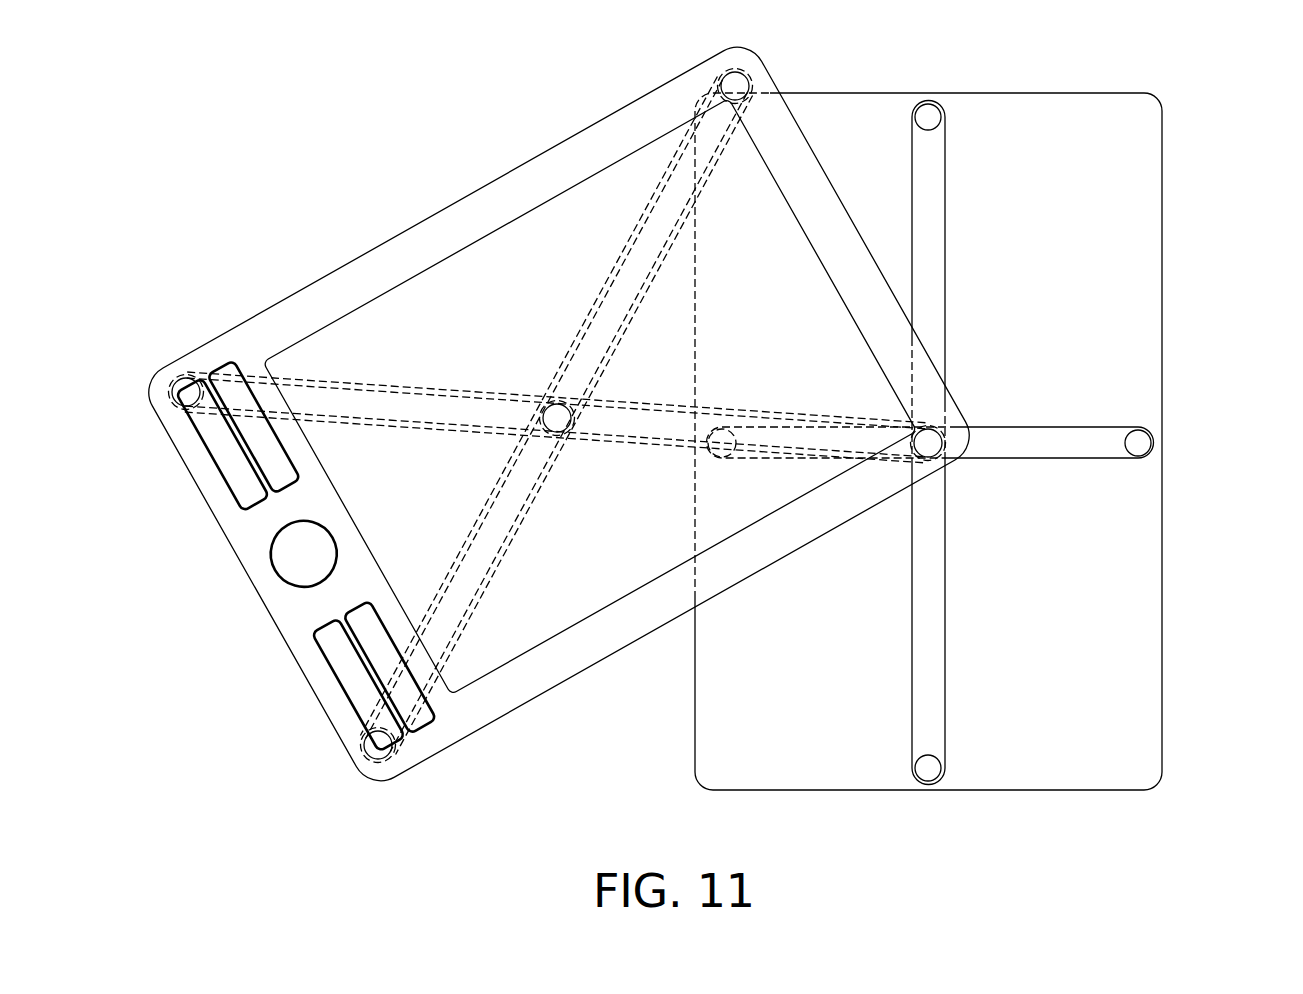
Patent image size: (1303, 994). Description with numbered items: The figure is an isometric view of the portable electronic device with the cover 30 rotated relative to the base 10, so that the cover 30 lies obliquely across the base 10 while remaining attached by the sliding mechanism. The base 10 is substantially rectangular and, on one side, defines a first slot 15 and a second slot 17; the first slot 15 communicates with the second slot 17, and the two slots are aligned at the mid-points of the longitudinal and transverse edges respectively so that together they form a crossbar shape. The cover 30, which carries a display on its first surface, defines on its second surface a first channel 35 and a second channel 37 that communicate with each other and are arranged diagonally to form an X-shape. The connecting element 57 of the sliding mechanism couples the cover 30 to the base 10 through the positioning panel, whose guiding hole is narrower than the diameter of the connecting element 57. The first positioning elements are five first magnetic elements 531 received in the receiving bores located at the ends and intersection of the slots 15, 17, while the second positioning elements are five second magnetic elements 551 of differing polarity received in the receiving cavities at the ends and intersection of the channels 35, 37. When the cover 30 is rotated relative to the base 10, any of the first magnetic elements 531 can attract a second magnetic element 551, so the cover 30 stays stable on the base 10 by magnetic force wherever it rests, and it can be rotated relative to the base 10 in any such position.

The base 10 is at (1115, 578).
The first slot 15 is at (1078, 445).
The second slot 17 is at (935, 697).
The cover 30 is at (252, 540).
The first channel 35 is at (342, 402).
The second channel 37 is at (447, 617).
The connecting element 57 is at (945, 402).
The first magnetic elements 531 is at (932, 108).
The second magnetic elements 551 is at (370, 752).